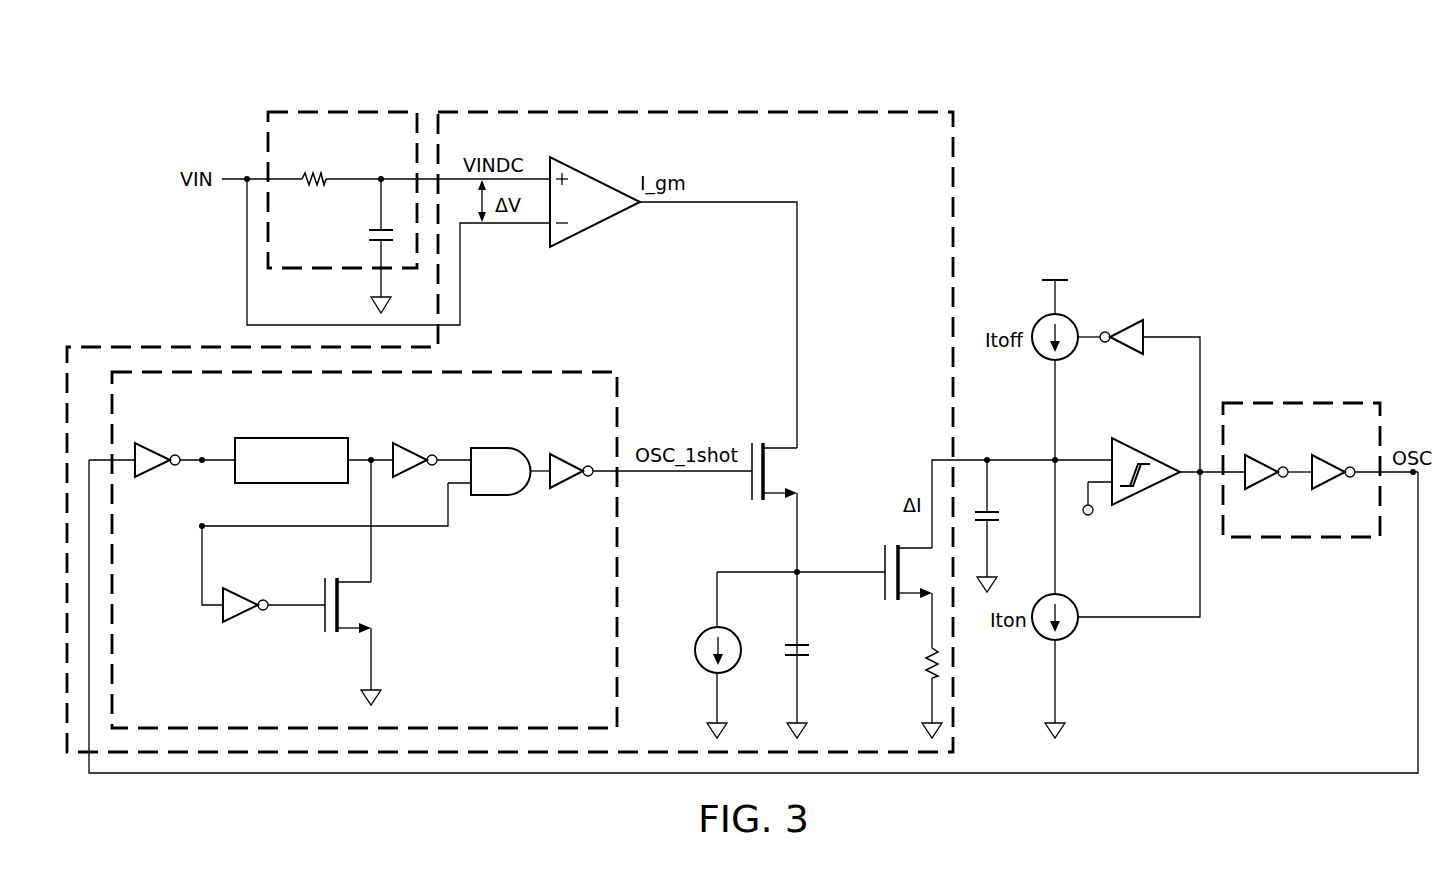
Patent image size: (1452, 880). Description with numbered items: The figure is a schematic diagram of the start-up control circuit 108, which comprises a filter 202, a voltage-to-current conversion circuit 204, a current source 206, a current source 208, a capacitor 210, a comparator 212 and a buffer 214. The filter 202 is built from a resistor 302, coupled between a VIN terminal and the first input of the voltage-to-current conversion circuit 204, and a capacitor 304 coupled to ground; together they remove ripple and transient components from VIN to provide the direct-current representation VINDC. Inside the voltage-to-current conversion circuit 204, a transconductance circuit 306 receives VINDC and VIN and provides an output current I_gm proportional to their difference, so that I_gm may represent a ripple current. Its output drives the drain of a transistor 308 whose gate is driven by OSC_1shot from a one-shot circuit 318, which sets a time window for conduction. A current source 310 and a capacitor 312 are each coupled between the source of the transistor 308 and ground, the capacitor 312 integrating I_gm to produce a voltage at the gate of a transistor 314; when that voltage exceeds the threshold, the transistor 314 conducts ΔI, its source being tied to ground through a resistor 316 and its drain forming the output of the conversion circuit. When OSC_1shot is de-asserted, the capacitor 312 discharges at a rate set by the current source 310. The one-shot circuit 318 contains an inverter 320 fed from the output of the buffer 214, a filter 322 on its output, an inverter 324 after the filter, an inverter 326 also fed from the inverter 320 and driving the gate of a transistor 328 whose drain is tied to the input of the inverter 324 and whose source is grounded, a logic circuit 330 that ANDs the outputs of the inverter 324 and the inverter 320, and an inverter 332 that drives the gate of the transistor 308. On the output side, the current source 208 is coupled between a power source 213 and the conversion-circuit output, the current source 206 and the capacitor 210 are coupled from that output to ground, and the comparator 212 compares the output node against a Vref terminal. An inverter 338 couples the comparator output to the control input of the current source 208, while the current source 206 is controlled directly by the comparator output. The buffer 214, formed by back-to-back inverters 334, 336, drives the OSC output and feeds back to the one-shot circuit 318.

The start-up control circuit 108 is at (1210, 99).
The filter 202 is at (328, 104).
The voltage-to-current conversion circuit 204 is at (562, 104).
The current source 206 is at (1072, 636).
The current source 208 is at (1036, 322).
The capacitor 210 is at (1001, 514).
The comparator 212 is at (1150, 452).
The power source 213 is at (1062, 280).
The buffer 214 is at (1314, 395).
The resistor 302 is at (312, 175).
The capacitor 304 is at (370, 233).
The transconductance circuit 306 is at (598, 174).
The transistor 308 is at (750, 482).
The current source 310 is at (702, 673).
The capacitor 312 is at (810, 652).
The transistor 314 is at (882, 562).
The resistor 316 is at (928, 660).
The one-shot circuit 318 is at (503, 368).
The inverter 320 is at (160, 443).
The filter 322 is at (290, 437).
The inverter 324 is at (415, 447).
The inverter 326 is at (245, 622).
The transistor 328 is at (322, 594).
The logic circuit 330 is at (492, 497).
The inverter 332 is at (570, 488).
The inverter 334 is at (1265, 487).
The inverter 336 is at (1332, 487).
The inverter 338 is at (1128, 320).